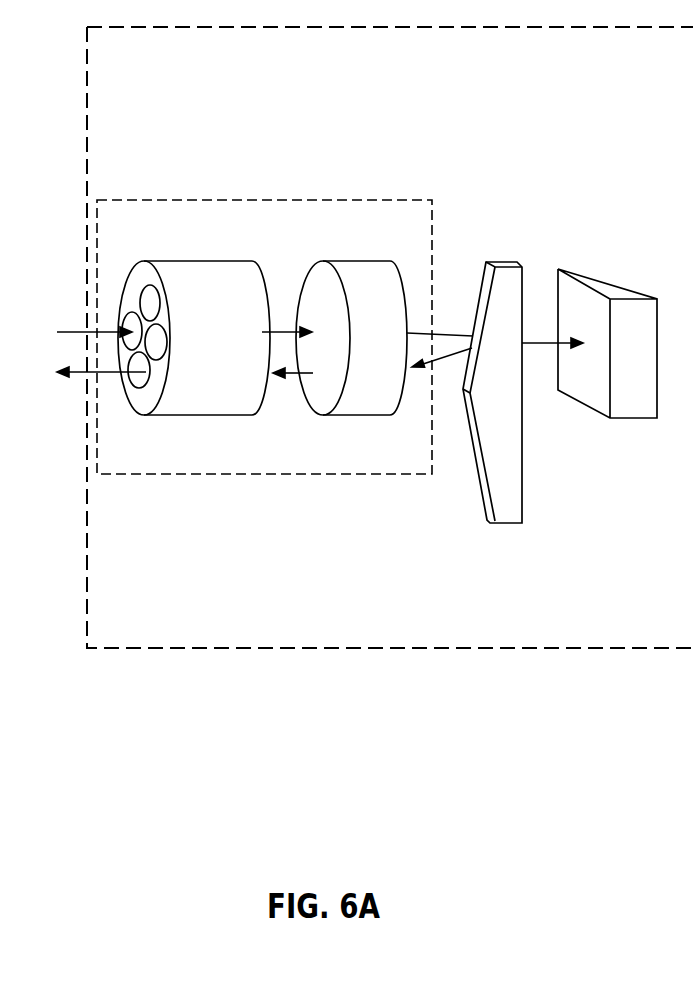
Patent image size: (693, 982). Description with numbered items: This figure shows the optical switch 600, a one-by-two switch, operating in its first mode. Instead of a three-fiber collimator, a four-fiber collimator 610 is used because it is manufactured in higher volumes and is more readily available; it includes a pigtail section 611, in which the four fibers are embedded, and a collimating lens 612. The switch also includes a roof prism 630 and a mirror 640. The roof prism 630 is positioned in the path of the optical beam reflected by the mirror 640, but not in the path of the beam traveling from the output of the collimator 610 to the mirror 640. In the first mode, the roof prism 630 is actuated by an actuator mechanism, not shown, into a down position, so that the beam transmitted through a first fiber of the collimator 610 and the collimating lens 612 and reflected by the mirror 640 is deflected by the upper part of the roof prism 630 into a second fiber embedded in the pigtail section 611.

The optical switch 600 is at (515, 648).
The four-fiber collimator 610 is at (243, 474).
The pigtail section 611 is at (188, 262).
The collimating lens 612 is at (355, 263).
The roof prism 630 is at (498, 262).
The mirror 640 is at (598, 268).